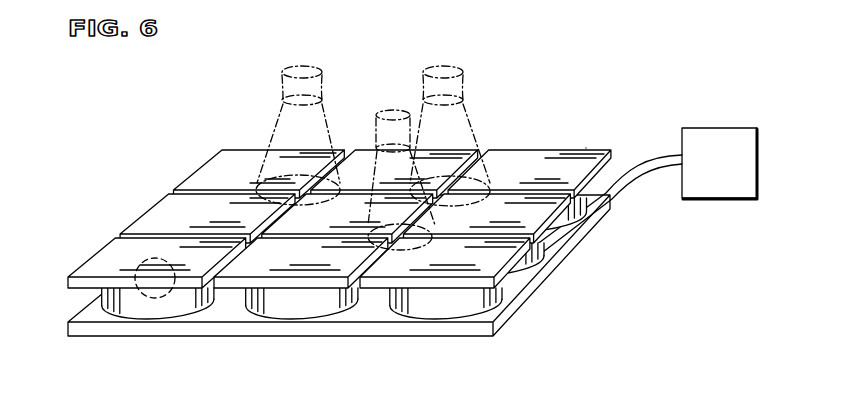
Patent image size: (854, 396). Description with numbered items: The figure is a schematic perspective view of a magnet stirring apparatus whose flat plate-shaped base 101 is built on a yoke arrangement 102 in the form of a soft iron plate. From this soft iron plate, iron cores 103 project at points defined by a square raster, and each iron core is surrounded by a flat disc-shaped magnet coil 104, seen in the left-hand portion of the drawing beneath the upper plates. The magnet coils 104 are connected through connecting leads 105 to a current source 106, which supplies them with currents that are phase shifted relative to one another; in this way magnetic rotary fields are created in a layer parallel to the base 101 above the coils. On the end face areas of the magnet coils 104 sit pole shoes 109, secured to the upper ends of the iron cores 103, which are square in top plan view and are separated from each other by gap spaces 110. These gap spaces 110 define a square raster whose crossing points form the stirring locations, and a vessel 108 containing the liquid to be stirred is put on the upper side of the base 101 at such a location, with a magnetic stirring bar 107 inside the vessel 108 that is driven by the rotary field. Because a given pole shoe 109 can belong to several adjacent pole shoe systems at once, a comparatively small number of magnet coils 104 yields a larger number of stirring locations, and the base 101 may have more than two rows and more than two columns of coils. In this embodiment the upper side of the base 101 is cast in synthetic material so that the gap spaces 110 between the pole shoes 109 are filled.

The base 101 is at (586, 148).
The yoke arrangement 102 is at (545, 281).
The iron cores 103 is at (135, 262).
The magnet coils 104 is at (256, 306).
The connecting leads 105 is at (627, 187).
The current source 106 is at (729, 142).
The magnetic stirring bar 107 is at (290, 176).
The vessel 108 is at (455, 76).
The pole shoes 109 is at (178, 210).
The gap spaces 110 is at (205, 190).